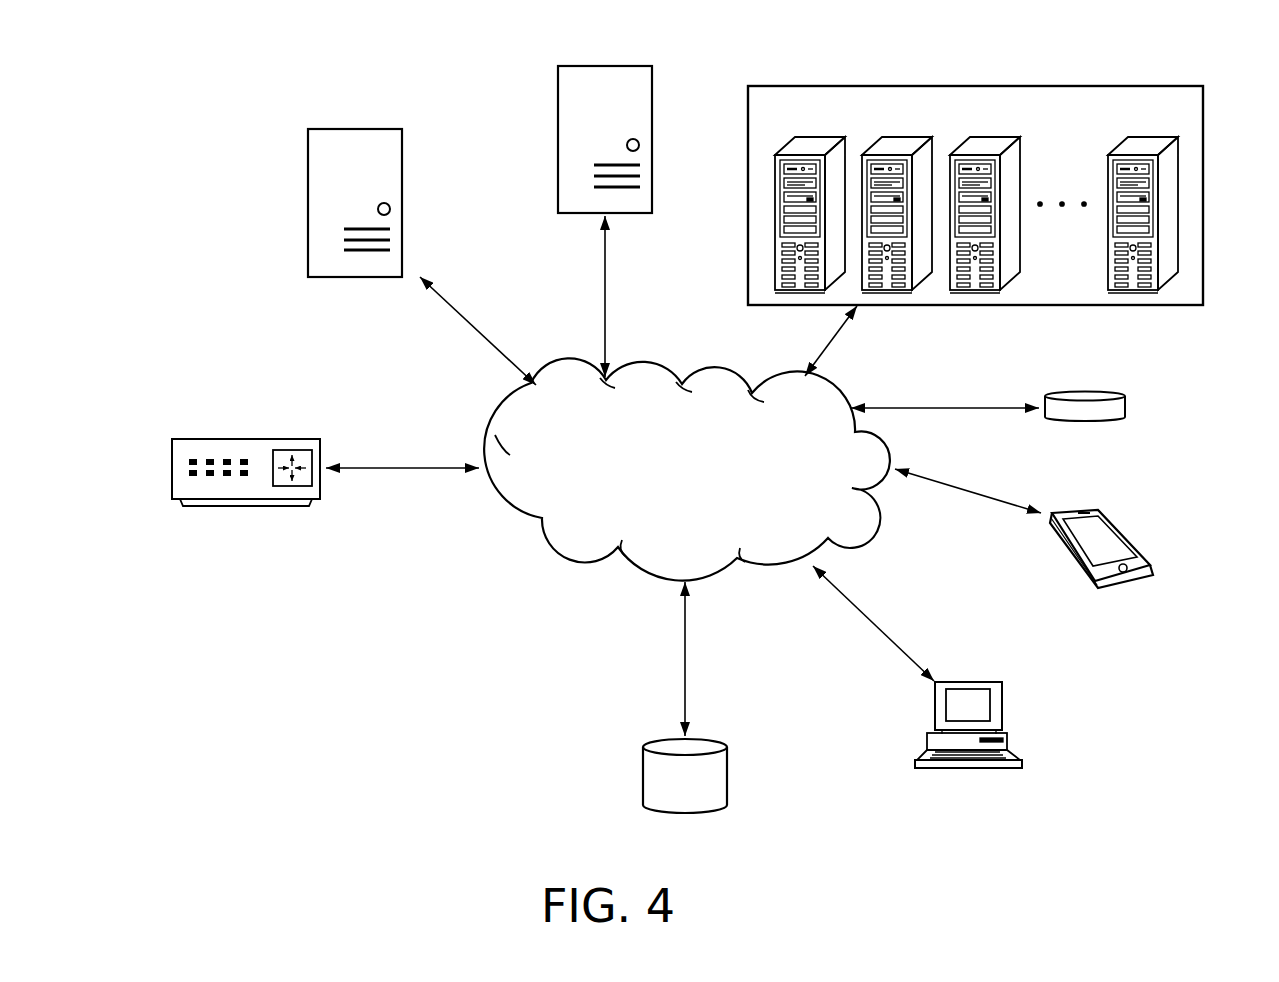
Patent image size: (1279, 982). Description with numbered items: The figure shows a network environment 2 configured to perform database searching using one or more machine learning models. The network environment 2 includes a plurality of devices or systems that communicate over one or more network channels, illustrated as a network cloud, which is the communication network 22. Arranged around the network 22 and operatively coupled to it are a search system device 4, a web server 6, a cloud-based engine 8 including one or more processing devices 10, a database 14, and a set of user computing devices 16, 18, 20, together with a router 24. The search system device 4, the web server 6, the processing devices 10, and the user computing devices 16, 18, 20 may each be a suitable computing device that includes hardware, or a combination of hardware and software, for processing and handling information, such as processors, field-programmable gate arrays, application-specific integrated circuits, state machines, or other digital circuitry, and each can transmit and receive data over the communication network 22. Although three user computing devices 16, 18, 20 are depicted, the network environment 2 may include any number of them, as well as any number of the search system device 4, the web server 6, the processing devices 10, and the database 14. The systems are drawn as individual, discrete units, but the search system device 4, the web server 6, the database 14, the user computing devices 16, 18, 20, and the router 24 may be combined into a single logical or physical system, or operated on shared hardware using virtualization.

The network environment 2 is at (892, 40).
The search system device 4 is at (628, 66).
The web server 6 is at (330, 129).
The cloud-based engine 8 is at (1090, 86).
The processing device 10 is at (815, 137).
The database 14 is at (715, 740).
The user computing device 16 is at (1100, 395).
The user computing device 18 is at (1126, 540).
The user computing device 20 is at (992, 682).
The network 22 is at (650, 360).
The router 24 is at (198, 439).